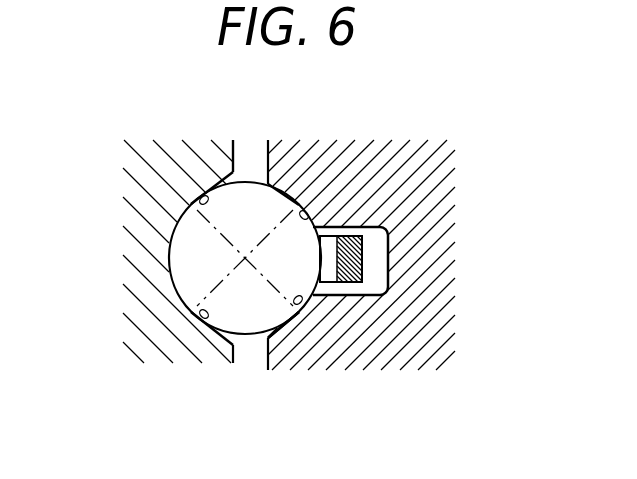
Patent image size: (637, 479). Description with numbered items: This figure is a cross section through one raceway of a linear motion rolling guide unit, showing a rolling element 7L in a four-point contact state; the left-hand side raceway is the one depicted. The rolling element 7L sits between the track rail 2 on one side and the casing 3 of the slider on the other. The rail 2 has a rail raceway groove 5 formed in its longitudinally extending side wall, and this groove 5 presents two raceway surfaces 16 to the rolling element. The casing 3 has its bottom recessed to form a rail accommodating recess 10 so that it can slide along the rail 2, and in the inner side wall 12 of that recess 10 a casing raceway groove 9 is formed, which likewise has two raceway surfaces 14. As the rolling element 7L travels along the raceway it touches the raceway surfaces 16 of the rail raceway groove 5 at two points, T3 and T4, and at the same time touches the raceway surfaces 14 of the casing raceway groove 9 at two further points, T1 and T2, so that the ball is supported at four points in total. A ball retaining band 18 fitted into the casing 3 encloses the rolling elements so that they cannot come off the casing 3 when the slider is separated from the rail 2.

The track rail 2 is at (433, 190).
The casing 3 is at (137, 222).
The rail raceway groove 5 is at (312, 304).
The rolling element 7L is at (245, 253).
The casing raceway groove 9 is at (177, 250).
The rail accommodating recess 10 is at (255, 157).
The inner side wall of the rail accommodating recess 12 is at (236, 160).
The raceway surface of the casing raceway groove 14 is at (213, 192).
The raceway surface of the rail raceway groove 16 is at (315, 222).
The ball retaining band 18 is at (362, 240).
The contact point T1 is at (193, 206).
The contact point T2 is at (192, 310).
The contact point T3 is at (300, 205).
The contact point T4 is at (302, 312).